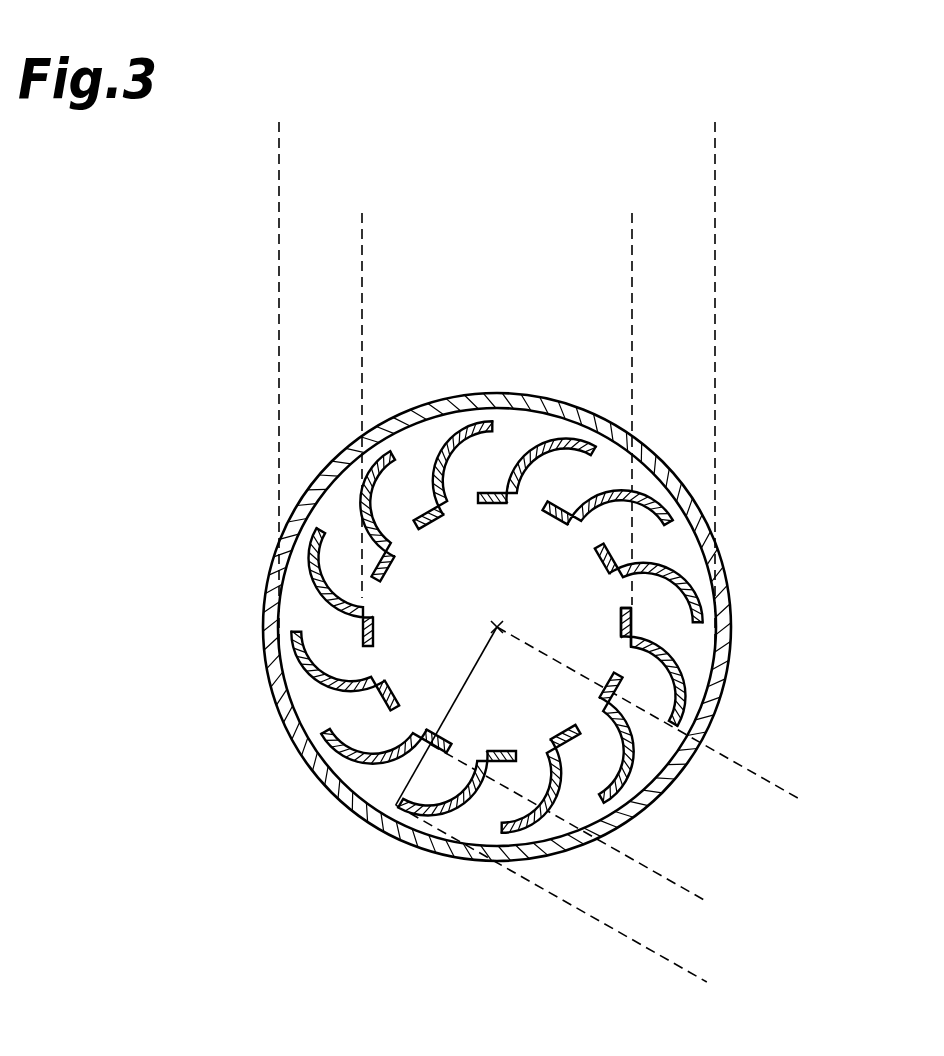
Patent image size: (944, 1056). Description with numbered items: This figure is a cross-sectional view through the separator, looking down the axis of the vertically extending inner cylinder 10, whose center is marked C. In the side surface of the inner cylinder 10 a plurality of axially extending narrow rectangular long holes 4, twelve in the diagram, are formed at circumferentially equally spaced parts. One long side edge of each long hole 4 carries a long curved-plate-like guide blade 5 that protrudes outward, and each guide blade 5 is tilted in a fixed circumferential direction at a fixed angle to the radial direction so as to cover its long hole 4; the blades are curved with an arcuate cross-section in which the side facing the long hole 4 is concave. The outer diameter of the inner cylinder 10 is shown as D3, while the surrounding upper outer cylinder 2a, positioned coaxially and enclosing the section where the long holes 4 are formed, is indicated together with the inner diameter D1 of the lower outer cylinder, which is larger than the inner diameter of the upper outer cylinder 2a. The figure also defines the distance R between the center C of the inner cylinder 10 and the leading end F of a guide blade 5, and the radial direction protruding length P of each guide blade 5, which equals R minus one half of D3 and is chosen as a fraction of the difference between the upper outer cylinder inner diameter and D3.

The upper outer cylinder 2a is at (507, 400).
The long hole 4 is at (368, 658).
The guide blade 5 is at (457, 437).
The inner cylinder 10 is at (633, 631).
The center of the inner cylinder C is at (498, 622).
The leading end of the guide blade F is at (396, 805).
The radial direction protruding length P is at (688, 891).
The distance between the center and the leading end of the guide blade R is at (790, 794).
The inner diameter of the lower outer cylinder D1 is at (715, 151).
The outer diameter of the inner cylinder D3 is at (632, 231).